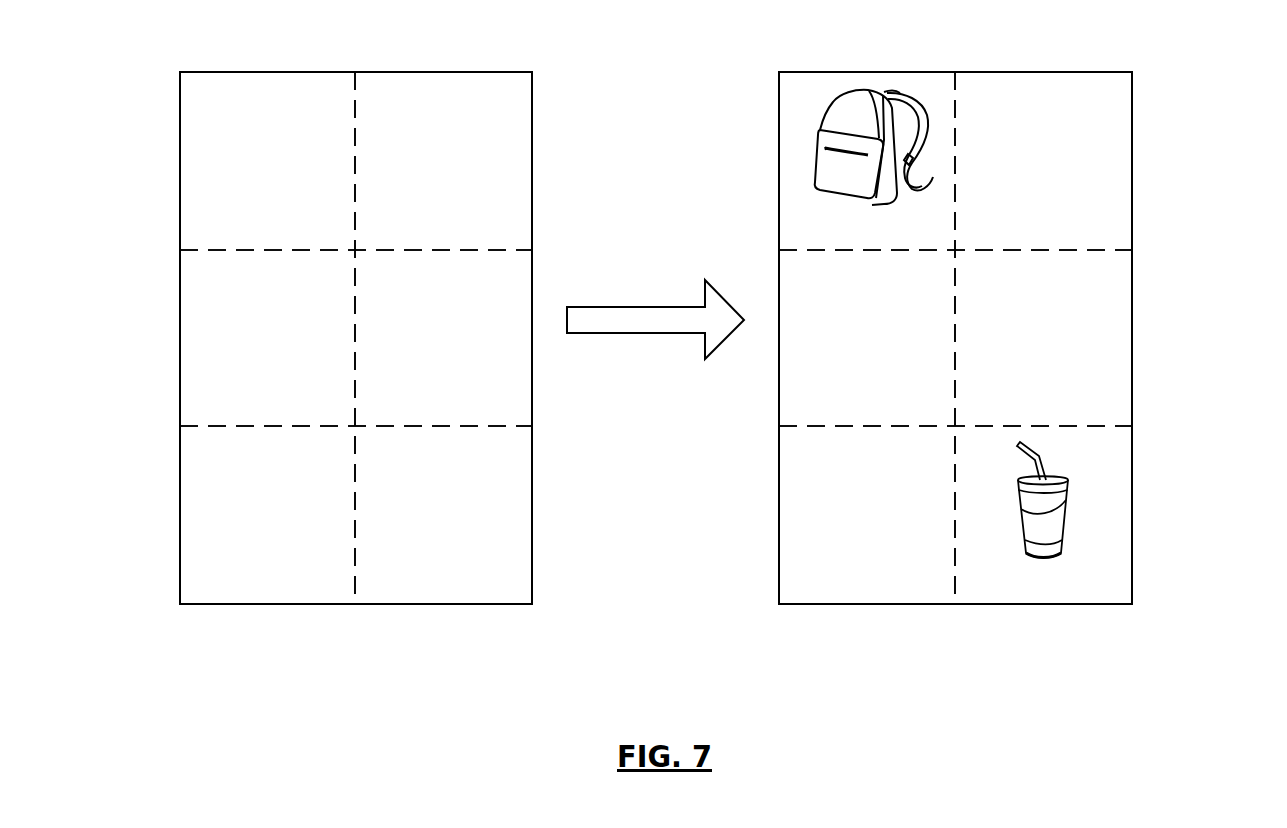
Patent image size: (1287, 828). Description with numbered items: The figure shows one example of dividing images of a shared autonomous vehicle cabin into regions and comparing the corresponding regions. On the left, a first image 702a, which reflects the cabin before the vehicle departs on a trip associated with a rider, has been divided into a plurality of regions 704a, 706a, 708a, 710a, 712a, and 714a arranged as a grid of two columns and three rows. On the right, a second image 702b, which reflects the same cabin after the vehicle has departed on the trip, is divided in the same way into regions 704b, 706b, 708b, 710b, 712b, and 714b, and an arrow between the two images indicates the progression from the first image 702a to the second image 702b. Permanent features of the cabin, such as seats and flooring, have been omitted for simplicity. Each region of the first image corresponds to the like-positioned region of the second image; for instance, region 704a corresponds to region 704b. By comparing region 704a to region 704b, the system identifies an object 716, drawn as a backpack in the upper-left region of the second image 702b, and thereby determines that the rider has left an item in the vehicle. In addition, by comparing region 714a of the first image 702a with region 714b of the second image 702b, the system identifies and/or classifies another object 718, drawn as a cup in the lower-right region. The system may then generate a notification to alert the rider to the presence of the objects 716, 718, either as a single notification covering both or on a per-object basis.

The first image 702a is at (226, 72).
The second image 702b is at (825, 72).
The region 704a is at (267, 161).
The region 706a is at (443, 161).
The region 708a is at (267, 338).
The region 710a is at (443, 338).
The region 712a is at (267, 515).
The region 714a is at (443, 515).
The region 704b is at (867, 161).
The region 706b is at (1043, 161).
The region 708b is at (867, 338).
The region 710b is at (1043, 338).
The region 712b is at (867, 515).
The region 714b is at (1043, 515).
The object 716 is at (818, 143).
The object 718 is at (1066, 503).